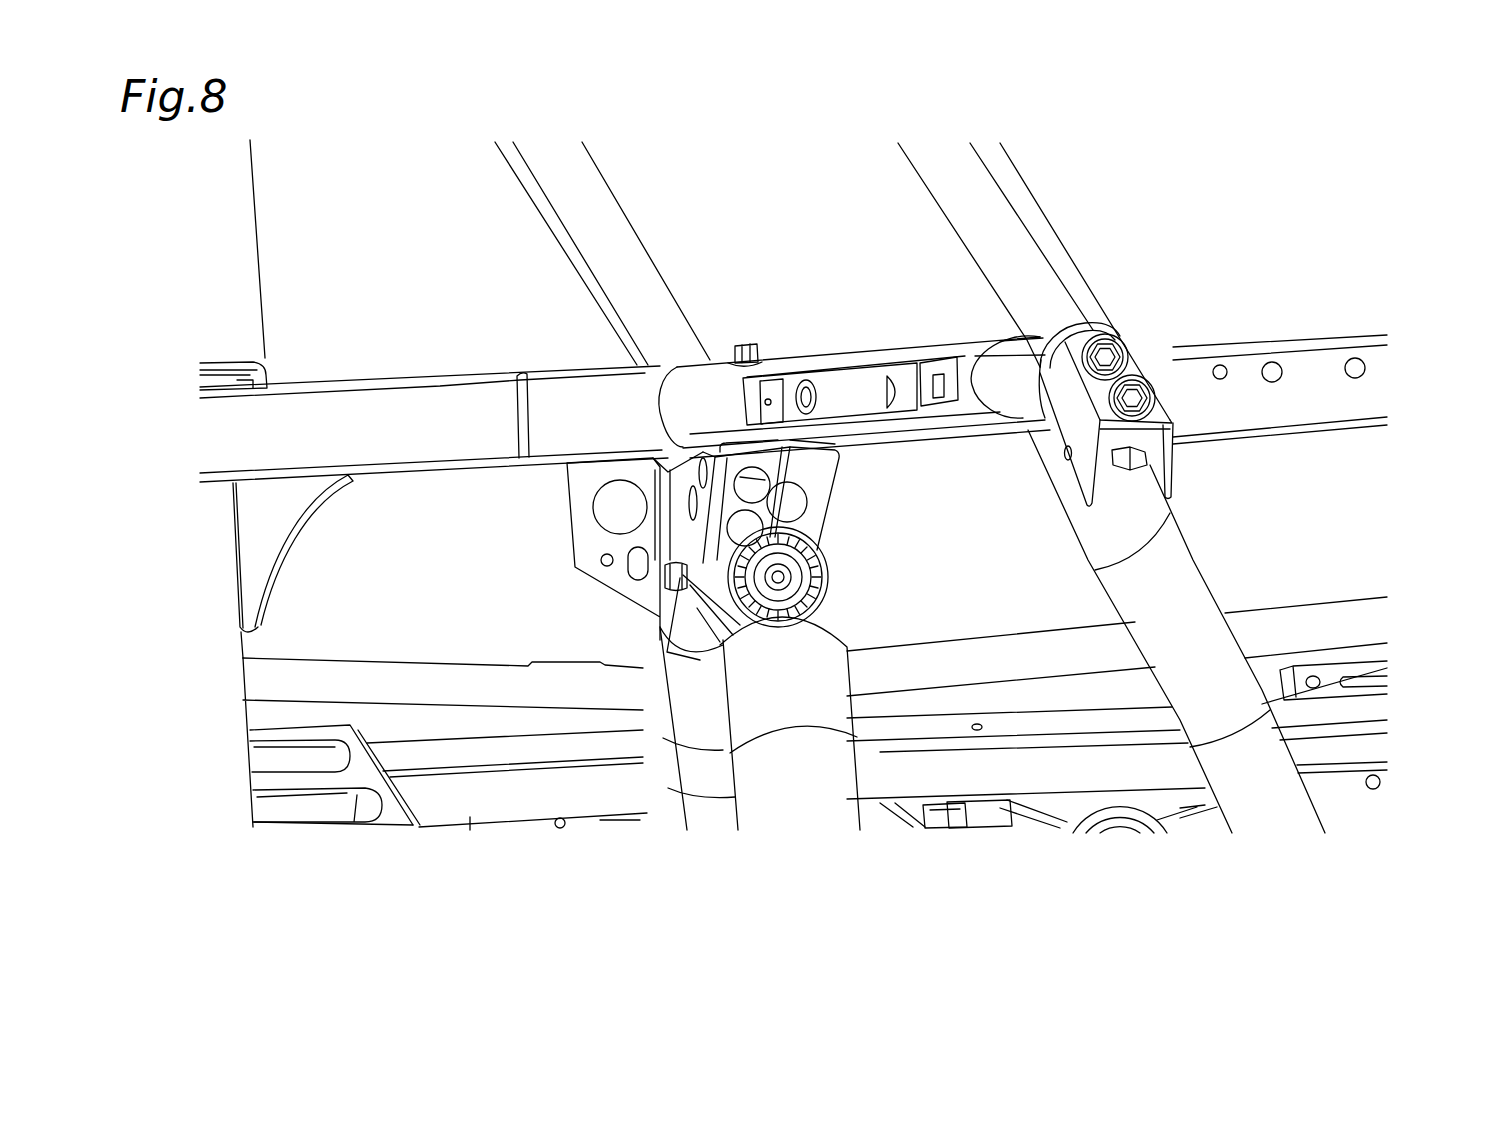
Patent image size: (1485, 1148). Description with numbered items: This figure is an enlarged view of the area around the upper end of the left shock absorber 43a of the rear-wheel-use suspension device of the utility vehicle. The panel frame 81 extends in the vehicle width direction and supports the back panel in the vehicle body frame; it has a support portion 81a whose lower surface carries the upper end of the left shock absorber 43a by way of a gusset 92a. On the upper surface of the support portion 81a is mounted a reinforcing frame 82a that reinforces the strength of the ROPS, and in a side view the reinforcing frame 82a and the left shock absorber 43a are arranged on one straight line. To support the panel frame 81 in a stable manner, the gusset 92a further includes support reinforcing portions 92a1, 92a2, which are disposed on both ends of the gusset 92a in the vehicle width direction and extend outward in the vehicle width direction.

The panel frame 81 is at (388, 427).
The support portion 81a is at (660, 410).
The reinforcing frame 82a is at (600, 210).
The gusset 92a is at (683, 528).
The support reinforcing portion 92a1 is at (583, 483).
The support reinforcing portion 92a2 is at (817, 468).
The left shock absorber 43a is at (706, 773).